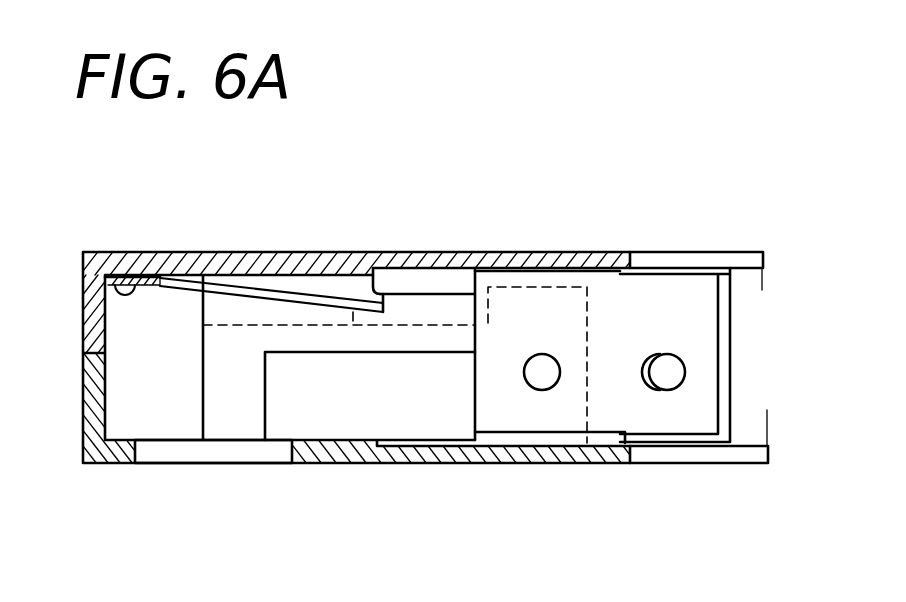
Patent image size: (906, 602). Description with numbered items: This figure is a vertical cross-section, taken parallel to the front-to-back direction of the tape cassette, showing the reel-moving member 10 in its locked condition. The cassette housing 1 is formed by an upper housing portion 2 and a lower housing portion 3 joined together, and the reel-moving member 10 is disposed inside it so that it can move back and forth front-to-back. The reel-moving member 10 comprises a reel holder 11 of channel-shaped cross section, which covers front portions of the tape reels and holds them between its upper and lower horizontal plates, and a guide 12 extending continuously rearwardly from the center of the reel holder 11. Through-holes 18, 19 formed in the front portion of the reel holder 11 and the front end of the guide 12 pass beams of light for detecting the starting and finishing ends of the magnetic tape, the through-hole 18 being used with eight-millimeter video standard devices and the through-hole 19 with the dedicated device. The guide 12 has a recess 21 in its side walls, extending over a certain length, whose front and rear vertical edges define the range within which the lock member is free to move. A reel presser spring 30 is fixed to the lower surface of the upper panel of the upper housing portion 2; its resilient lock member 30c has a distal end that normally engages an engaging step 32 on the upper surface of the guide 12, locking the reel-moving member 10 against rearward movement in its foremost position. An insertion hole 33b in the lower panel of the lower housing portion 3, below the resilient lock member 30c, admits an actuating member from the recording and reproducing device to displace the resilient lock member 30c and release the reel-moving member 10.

The cassette housing 1 is at (220, 253).
The upper housing portion 2 is at (92, 298).
The lower housing portion 3 is at (90, 434).
The reel-moving member 10 is at (725, 349).
The reel holder 11 is at (664, 272).
The guide 12 is at (435, 340).
The through-hole 18 is at (678, 366).
The through-hole 19 is at (530, 366).
The recess 21 is at (282, 396).
The reel presser spring 30 is at (178, 278).
The resilient lock member 30c is at (307, 296).
The engaging step 32 is at (378, 272).
The insertion hole 33b is at (137, 448).